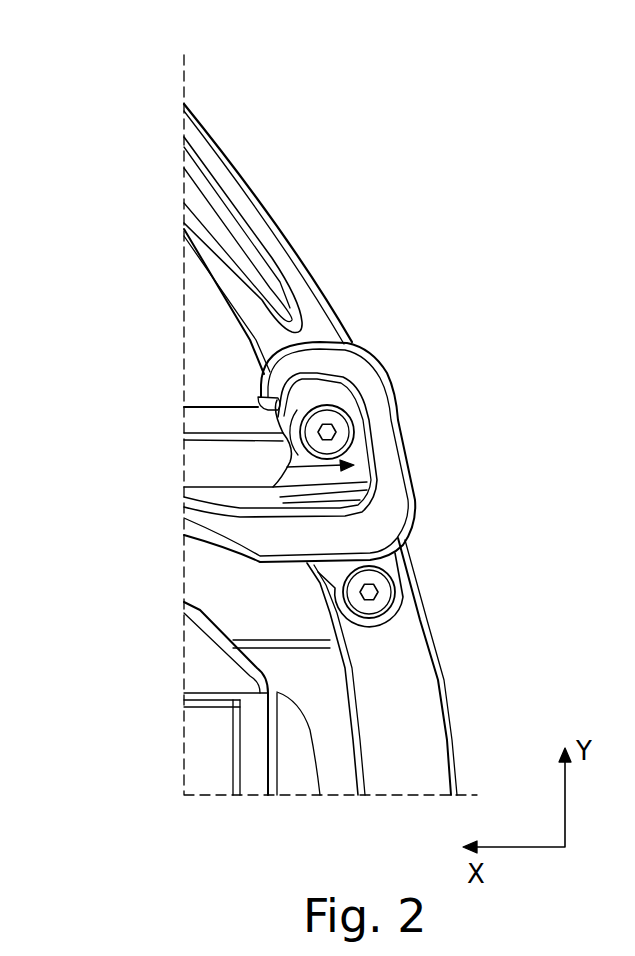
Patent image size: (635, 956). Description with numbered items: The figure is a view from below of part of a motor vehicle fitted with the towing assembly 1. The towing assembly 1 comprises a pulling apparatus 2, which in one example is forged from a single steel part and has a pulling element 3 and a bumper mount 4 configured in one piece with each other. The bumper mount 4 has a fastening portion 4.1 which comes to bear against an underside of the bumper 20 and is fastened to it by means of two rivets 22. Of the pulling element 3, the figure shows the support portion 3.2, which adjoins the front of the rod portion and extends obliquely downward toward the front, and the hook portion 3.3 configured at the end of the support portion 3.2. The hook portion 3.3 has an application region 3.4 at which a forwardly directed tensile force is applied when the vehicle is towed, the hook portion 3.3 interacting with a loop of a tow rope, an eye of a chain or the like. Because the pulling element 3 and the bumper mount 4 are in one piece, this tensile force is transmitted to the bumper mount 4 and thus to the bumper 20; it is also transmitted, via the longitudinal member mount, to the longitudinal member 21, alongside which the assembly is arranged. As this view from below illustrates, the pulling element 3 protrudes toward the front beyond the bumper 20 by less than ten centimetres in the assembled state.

The towing assembly 1 is at (380, 301).
The pulling apparatus 2 is at (237, 553).
The pulling element 3 is at (300, 611).
The support portion 3.2 is at (216, 542).
The hook portion 3.3 is at (424, 460).
The application region 3.4 is at (293, 465).
The bumper mount 4 is at (266, 478).
The fastening portion 4.1 is at (398, 553).
The bumper 20 is at (408, 670).
The longitudinal member 21 is at (237, 415).
The rivets 22 is at (333, 424).